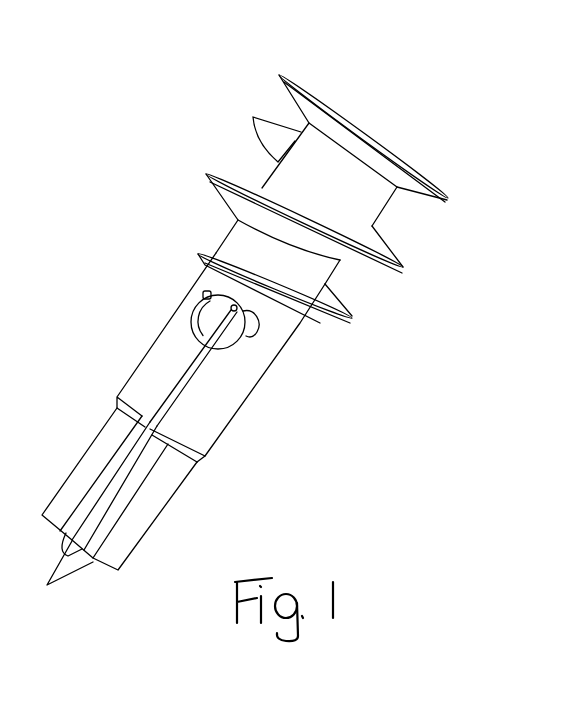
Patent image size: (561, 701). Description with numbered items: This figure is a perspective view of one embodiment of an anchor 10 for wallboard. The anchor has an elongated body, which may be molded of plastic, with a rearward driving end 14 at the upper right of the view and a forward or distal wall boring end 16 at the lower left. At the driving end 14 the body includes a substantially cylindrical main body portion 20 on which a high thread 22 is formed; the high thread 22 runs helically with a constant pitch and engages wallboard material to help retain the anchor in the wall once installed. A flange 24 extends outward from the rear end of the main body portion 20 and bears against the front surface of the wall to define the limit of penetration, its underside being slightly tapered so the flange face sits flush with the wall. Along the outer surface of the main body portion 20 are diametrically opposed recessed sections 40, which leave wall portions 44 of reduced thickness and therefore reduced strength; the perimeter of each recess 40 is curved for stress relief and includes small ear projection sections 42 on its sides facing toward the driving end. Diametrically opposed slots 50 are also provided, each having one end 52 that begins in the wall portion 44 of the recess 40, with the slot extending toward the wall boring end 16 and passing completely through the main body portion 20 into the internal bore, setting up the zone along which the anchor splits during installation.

The anchor 10 is at (164, 66).
The driving end 14 is at (438, 236).
The wall boring end 16 is at (110, 586).
The main body portion 20 is at (354, 266).
The high thread 22 is at (209, 175).
The flange 24 is at (279, 75).
The recessed section 40 is at (191, 322).
The ear projection section 42 is at (206, 291).
The wall portion 44 is at (238, 337).
The slot 50 is at (192, 356).
The slot end 52 is at (231, 305).